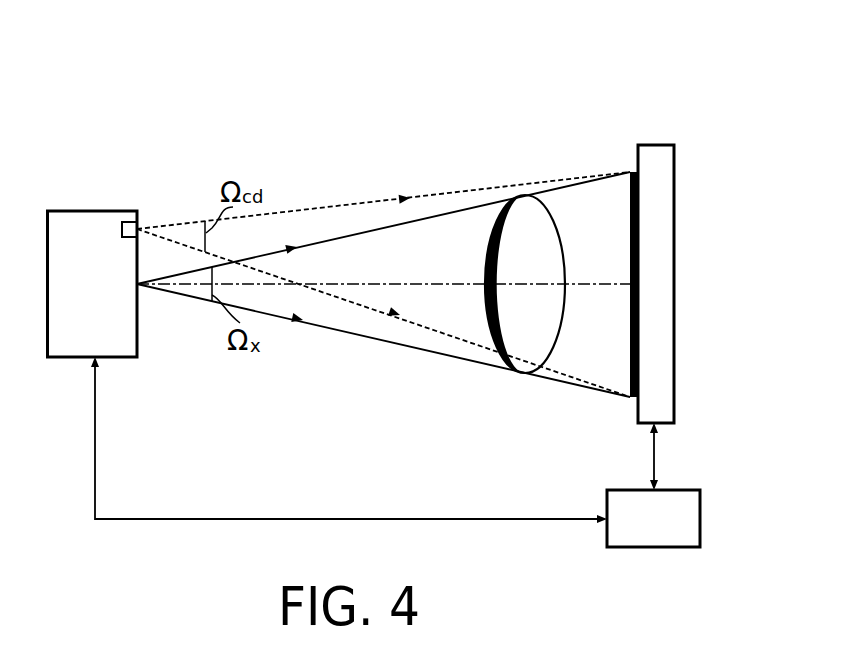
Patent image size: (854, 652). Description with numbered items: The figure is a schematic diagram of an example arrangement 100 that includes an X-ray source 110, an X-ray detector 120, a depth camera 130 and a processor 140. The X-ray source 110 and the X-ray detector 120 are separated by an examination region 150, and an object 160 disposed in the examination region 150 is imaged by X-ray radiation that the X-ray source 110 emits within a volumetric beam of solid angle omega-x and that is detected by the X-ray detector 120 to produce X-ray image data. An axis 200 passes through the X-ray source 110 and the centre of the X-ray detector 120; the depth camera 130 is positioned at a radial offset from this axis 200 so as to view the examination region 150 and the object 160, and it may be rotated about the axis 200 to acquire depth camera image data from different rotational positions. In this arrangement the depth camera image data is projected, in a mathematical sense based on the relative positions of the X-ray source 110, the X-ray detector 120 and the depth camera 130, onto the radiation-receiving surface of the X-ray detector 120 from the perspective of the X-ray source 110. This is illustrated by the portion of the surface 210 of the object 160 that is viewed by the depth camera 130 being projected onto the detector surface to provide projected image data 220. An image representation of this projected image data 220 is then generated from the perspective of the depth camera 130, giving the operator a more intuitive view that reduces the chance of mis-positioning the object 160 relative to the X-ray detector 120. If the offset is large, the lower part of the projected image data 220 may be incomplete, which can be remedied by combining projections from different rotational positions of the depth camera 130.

The optical system 100 is at (390, 78).
The X-ray source 110 is at (114, 302).
The X-ray detector 120 is at (672, 158).
The depth camera 130 is at (122, 227).
The processor 140 is at (395, 452).
The examination region 150 is at (618, 259).
The object 160 is at (550, 274).
The axis 200 is at (378, 283).
The portion of the surface 210 is at (492, 218).
The projected image data 220 is at (628, 193).